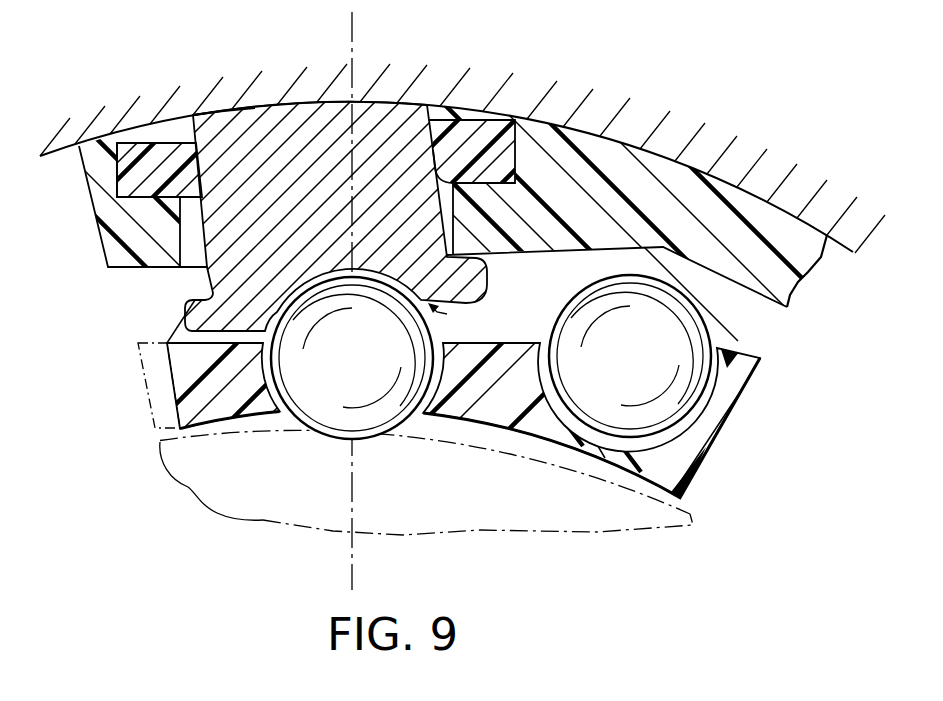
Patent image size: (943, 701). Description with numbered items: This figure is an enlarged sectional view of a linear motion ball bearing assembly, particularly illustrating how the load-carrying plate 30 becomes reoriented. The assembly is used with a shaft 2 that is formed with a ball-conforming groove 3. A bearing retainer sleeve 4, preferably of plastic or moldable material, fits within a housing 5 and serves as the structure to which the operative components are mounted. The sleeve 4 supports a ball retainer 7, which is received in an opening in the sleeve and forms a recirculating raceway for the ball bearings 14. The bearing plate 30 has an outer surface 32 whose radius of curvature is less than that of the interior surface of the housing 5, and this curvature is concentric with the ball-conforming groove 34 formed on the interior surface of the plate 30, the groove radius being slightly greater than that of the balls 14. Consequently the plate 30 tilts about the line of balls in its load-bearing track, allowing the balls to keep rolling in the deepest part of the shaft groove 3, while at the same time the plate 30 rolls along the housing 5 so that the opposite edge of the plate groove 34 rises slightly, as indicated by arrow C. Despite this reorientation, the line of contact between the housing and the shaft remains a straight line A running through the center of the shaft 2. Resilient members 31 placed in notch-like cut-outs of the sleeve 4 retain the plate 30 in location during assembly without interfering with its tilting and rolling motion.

The shaft 2 is at (162, 441).
The ball-conforming groove 3 is at (333, 442).
The bearing retainer sleeve 4 is at (102, 173).
The housing 5 is at (707, 143).
The ball retainer 7 is at (507, 400).
The ball bearings 14 is at (420, 347).
The load-carrying plate 30 is at (297, 160).
The resilient member 31 is at (140, 150).
The outer surface of load-carrying plate 32 is at (223, 130).
The ball-conforming groove of bearing plate 34 is at (170, 367).
The line of contact A is at (352, 36).
The arrow indicating rising of plate groove edge C is at (447, 314).